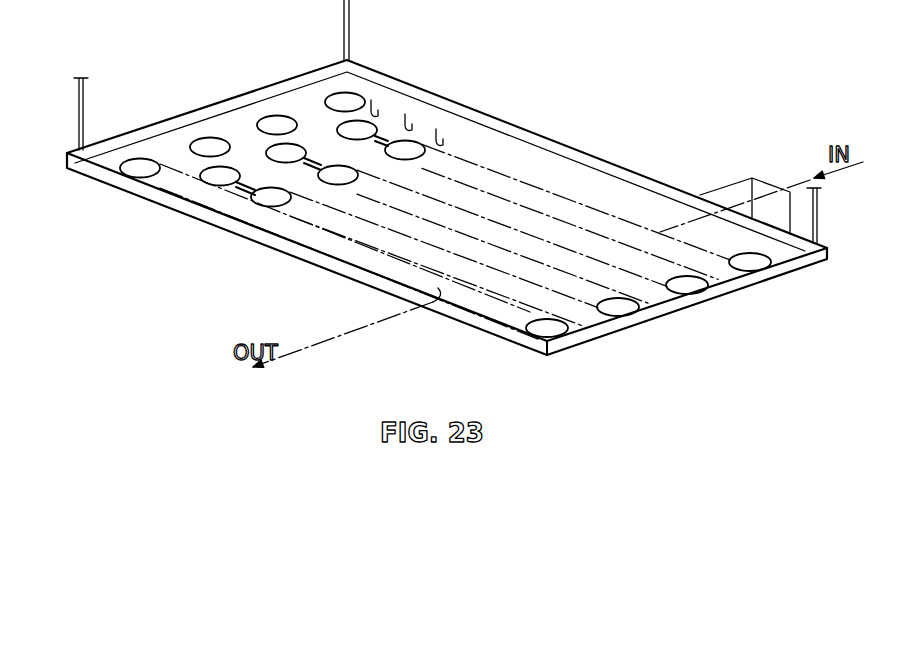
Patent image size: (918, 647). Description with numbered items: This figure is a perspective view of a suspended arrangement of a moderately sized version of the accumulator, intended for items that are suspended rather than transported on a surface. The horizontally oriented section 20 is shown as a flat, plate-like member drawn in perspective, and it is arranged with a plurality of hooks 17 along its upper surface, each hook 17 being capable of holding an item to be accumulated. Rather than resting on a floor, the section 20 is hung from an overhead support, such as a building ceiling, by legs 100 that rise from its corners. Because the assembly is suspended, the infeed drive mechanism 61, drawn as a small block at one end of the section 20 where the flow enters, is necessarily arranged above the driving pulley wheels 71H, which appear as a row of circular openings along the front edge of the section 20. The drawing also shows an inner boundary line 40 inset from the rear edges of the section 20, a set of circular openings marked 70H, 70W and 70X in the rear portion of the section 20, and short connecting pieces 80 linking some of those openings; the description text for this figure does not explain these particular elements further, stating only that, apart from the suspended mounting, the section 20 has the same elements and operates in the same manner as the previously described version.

The horizontally oriented section 20 is at (527, 130).
The membrane layer 40 is at (563, 172).
The legs 100 is at (78, 94).
The holes 70H is at (277, 118).
The hole 70W is at (215, 180).
The hole 70X is at (258, 200).
The connecting channels 80 is at (240, 190).
The hooks 17 is at (470, 145).
The infeed drive mechanism 61 is at (730, 187).
The driving pulley wheels 71H is at (617, 313).